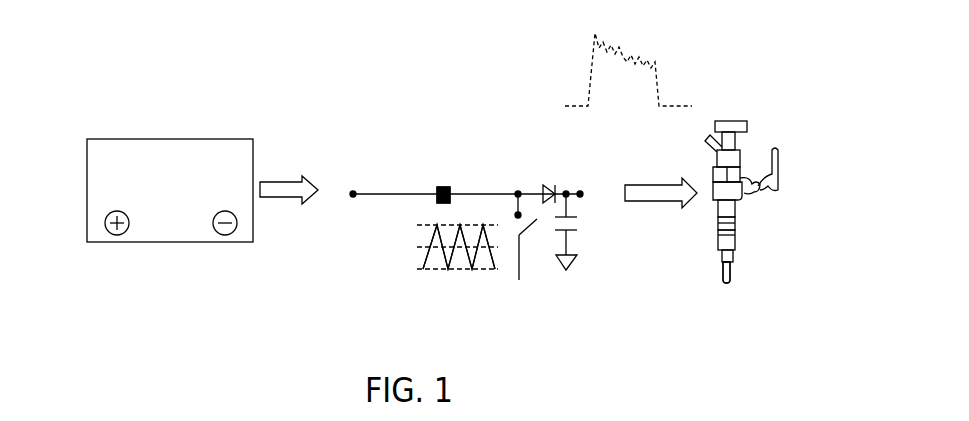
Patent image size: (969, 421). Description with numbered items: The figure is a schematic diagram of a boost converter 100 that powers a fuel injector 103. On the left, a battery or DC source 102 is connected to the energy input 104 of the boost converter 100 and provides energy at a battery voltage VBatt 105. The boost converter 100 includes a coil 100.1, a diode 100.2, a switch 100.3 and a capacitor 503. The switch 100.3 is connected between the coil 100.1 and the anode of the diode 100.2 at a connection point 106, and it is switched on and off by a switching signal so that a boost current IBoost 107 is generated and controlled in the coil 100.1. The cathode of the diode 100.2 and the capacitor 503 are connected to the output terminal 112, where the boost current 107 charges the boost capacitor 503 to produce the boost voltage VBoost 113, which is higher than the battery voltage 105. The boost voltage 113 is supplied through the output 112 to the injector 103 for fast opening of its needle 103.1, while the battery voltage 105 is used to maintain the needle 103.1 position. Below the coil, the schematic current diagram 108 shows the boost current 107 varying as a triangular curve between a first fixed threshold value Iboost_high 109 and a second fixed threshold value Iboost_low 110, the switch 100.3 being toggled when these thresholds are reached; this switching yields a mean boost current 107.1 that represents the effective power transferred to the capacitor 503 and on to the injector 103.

The boost converter 100 is at (402, 98).
The DC source 102 is at (165, 108).
The energy input 104 is at (318, 205).
The battery voltage VBatt 105 is at (352, 189).
The connection point 106 is at (518, 190).
The boost current IBoost 107 is at (453, 179).
The mean boost current 107.1 is at (422, 244).
The schematic current diagram 108 is at (397, 274).
The first fixed threshold value Iboost_high 109 is at (428, 225).
The second fixed threshold value Iboost_low 110 is at (412, 272).
The output terminal 112 is at (625, 181).
The boost voltage VBoost 113 is at (583, 196).
The coil 100.1 is at (452, 185).
The diode 100.2 is at (545, 186).
The switch 100.3 is at (528, 230).
The capacitor 503 is at (577, 237).
The injector 103 is at (714, 262).
The needle 103.1 is at (732, 270).